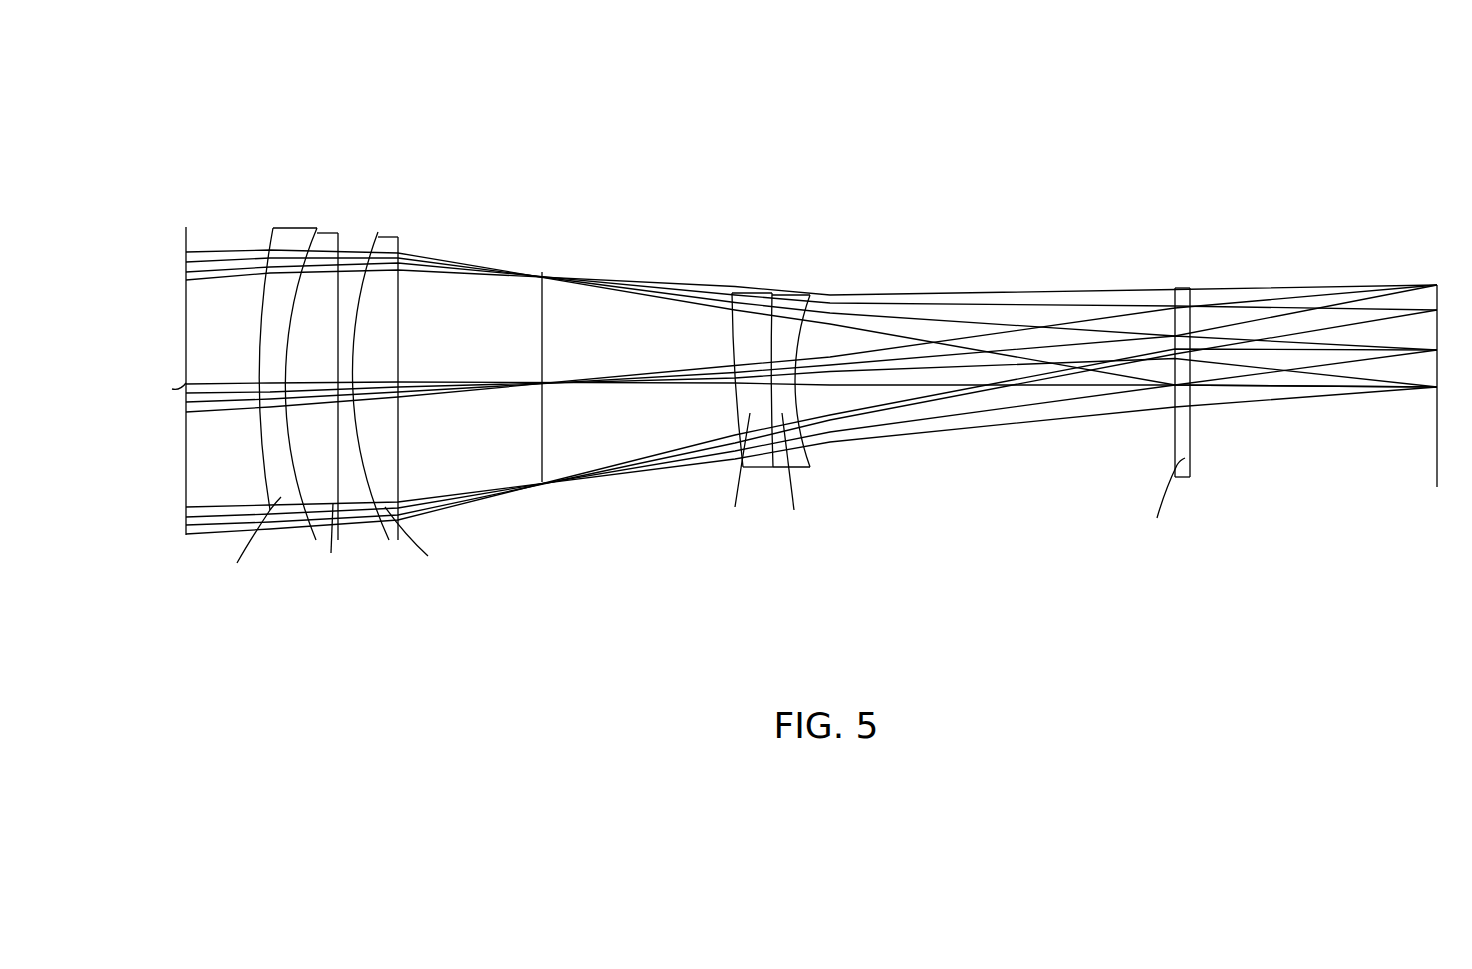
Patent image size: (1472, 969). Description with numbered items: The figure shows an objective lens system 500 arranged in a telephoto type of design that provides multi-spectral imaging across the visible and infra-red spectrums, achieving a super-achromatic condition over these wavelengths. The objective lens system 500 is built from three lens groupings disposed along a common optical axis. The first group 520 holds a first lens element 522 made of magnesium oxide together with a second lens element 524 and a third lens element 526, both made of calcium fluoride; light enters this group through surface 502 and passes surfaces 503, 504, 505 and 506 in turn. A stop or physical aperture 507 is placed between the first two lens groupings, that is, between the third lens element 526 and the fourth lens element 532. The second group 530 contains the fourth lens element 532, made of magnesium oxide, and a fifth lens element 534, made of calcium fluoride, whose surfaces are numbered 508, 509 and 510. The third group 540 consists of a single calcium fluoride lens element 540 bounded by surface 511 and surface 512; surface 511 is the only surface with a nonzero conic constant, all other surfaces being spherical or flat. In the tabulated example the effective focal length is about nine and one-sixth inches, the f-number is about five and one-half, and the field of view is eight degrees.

The objective lens system 500 is at (787, 112).
The surface 502 is at (272, 229).
The surface 503 is at (317, 229).
The surface 504 is at (339, 233).
The surface 505 is at (380, 232).
The surface 506 is at (400, 236).
The stop or physical aperture 507 is at (542, 272).
The surface 508 is at (734, 318).
The surface 509 is at (770, 320).
The surface 510 is at (795, 318).
The surface 511 is at (1174, 291).
The surface 512 is at (1190, 290).
The first group 520 is at (425, 624).
The first lens element 522 is at (284, 528).
The second lens element 524 is at (323, 500).
The third lens element 526 is at (391, 493).
The second group 530 is at (858, 570).
The fourth lens element 532 is at (766, 459).
The fifth lens element 534 is at (802, 458).
The third group 540 is at (1188, 480).